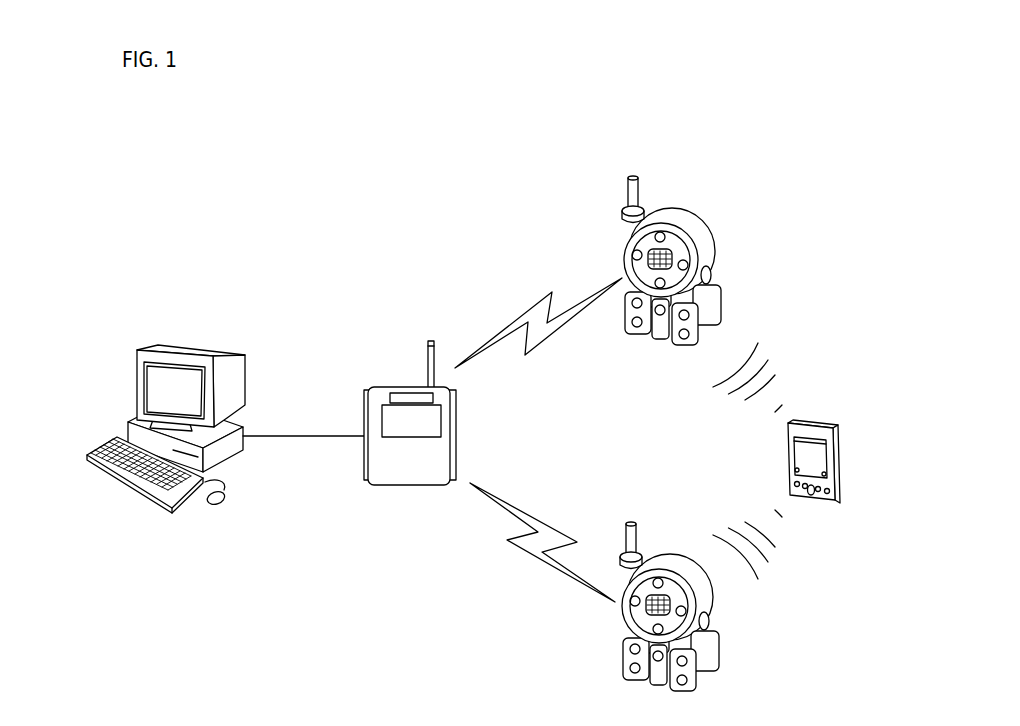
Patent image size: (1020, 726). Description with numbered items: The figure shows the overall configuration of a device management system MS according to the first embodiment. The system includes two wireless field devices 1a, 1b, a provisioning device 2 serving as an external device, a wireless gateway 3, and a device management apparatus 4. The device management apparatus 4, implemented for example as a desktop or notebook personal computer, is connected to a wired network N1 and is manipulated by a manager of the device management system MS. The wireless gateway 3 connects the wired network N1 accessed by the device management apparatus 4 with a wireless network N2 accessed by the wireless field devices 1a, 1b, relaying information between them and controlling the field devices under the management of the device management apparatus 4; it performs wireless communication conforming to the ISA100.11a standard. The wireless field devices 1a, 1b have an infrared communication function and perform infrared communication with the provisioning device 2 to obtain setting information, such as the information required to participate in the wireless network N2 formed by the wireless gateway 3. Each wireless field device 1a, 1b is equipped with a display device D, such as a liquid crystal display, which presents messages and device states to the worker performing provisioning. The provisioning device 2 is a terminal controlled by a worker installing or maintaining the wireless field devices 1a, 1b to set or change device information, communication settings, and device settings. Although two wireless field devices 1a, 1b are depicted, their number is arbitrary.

The device management system MS is at (260, 192).
The wireless field device 1a is at (713, 236).
The wireless field device 1b is at (712, 598).
The provisioning device 2 is at (838, 430).
The wireless gateway 3 is at (410, 486).
The device management apparatus 4 is at (245, 368).
The display device D is at (650, 265).
The wired network N1 is at (306, 437).
The wireless network N2 is at (504, 568).